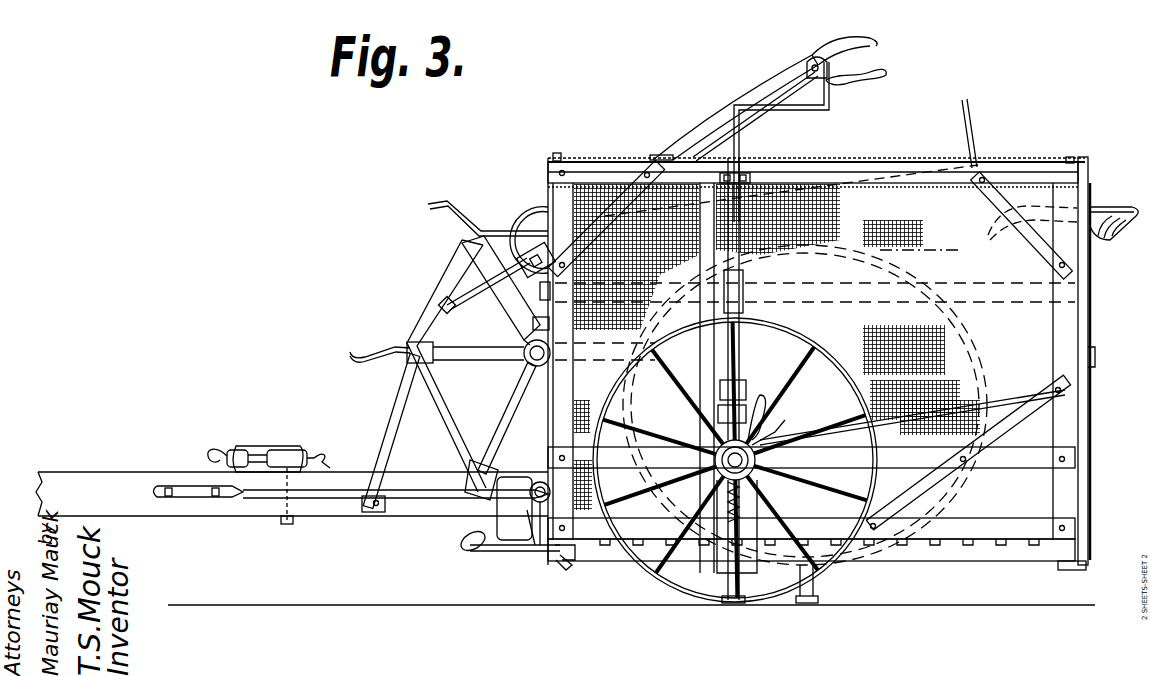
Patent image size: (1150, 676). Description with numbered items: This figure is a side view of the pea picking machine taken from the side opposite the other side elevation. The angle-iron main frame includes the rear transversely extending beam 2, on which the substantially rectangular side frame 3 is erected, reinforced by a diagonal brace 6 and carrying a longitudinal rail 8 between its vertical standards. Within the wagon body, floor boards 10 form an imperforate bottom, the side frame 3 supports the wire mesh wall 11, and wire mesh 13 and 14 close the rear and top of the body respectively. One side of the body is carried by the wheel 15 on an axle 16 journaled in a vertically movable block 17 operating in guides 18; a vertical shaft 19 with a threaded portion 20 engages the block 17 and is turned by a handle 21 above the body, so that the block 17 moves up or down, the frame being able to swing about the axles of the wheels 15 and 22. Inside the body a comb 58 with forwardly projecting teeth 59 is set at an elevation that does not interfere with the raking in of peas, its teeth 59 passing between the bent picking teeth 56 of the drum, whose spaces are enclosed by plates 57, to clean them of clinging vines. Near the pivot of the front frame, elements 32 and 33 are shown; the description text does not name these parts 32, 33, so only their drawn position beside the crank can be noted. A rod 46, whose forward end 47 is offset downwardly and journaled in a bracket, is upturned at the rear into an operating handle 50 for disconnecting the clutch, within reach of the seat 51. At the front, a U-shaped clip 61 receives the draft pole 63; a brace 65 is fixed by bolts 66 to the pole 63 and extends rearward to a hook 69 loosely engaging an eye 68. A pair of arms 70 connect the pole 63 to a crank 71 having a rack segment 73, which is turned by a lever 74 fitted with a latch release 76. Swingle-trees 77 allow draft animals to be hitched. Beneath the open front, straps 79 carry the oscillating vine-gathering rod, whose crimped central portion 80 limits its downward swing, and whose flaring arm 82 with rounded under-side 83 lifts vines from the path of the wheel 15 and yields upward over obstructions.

The rear transversely extending beam 2 is at (1060, 568).
The side frame 3 is at (1032, 175).
The diagonal brace 6 is at (1020, 410).
The rail 8 is at (1070, 455).
The floor boards 10 is at (990, 565).
The wire mesh or screen wall 11 is at (862, 185).
The wire mesh or screen 13 is at (1092, 300).
The wire mesh or screen 14 is at (1013, 160).
The wheel 15 is at (660, 600).
The axle 16 is at (773, 433).
The vertically movable block 17 is at (758, 415).
The guides 18 is at (790, 475).
The vertical shaft 19 is at (745, 240).
The threaded portion 20 is at (755, 500).
The handle 21 is at (829, 107).
The wheel 22 is at (875, 610).
The pivot hub 32 is at (515, 362).
The cross bar 33 is at (520, 372).
The rod 46 is at (918, 178).
The forward end 47 is at (520, 222).
The operating handle 50 is at (962, 123).
The seat 51 is at (1114, 212).
The picking teeth 56 is at (428, 207).
The plates 57 is at (443, 272).
The comb 58 is at (740, 355).
The teeth 59 is at (805, 378).
The U-shaped clip 61 is at (535, 548).
The draft pole 63 is at (98, 472).
The brace 65 is at (345, 500).
The bolts 66 is at (215, 500).
The eye 68 is at (540, 480).
The hook 69 is at (525, 540).
The arms 70 is at (400, 400).
The crank 71 is at (501, 288).
The rack segment 73 is at (540, 215).
The lever 74 is at (770, 87).
The latch release 76 is at (886, 72).
The swingle-trees 77 is at (245, 448).
The straps 79 is at (552, 560).
The crimped central portion 80 is at (568, 562).
The arm 82 is at (490, 555).
The rounded under-sides 83 is at (468, 548).